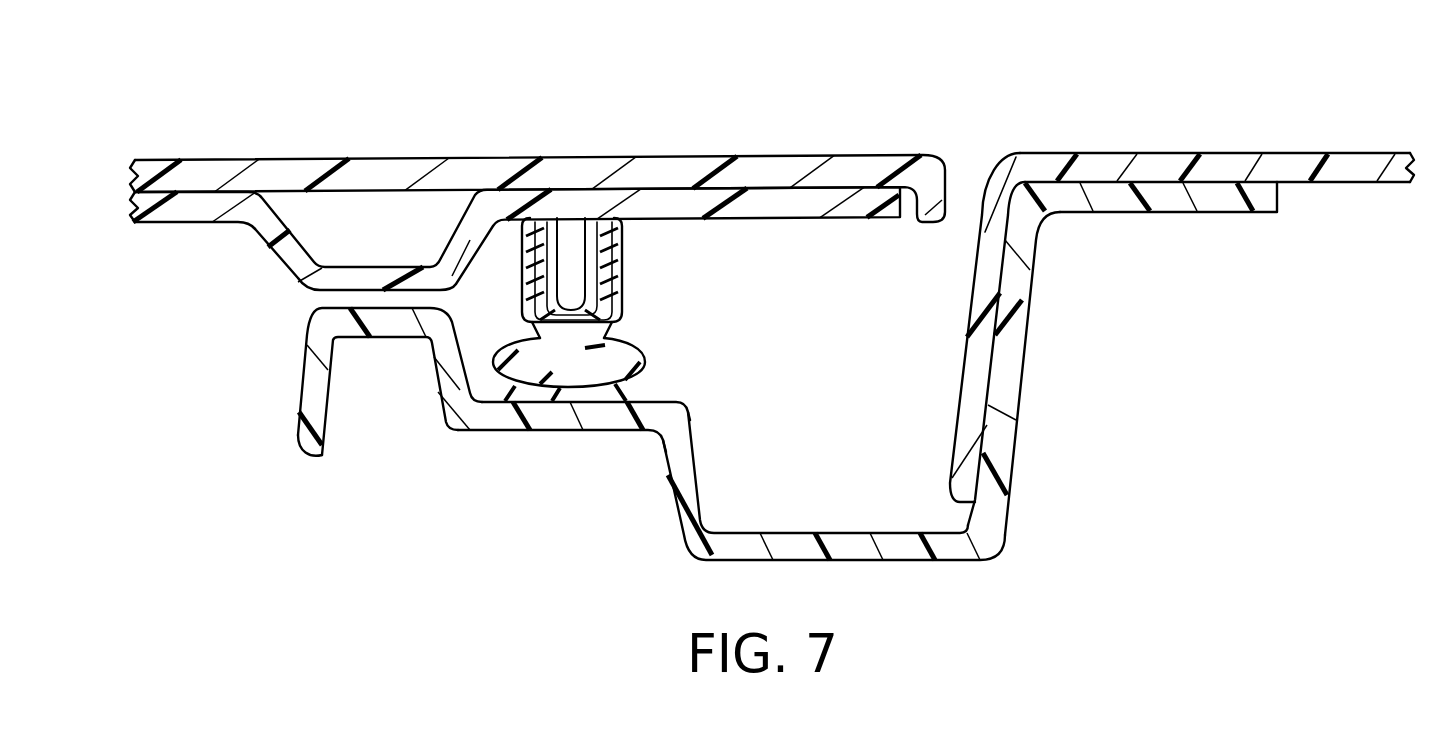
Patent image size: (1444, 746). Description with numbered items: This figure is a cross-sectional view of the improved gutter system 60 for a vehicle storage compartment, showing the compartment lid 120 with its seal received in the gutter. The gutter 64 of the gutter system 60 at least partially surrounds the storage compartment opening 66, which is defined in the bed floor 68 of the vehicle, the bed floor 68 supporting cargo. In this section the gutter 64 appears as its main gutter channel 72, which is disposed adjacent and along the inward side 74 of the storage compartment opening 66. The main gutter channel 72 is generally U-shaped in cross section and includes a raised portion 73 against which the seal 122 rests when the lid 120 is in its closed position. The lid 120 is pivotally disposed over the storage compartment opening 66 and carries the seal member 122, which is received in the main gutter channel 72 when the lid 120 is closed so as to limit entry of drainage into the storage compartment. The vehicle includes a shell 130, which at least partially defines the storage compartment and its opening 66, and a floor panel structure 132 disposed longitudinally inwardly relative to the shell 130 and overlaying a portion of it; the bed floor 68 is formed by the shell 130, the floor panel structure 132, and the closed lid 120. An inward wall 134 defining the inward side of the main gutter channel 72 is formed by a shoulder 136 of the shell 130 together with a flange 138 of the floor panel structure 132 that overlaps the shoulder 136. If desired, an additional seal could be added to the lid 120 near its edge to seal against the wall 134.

The gutter system 60 is at (734, 332).
The gutter 64 is at (895, 514).
The storage compartment opening 66 is at (182, 300).
The bed floor 68 is at (1353, 151).
The main gutter channel 72 is at (834, 517).
The raised portion 73 is at (662, 405).
The inward side 74 is at (298, 395).
The lid 120 is at (318, 158).
The seal member 122 is at (622, 350).
The shell 130 is at (332, 382).
The floor panel structure 132 is at (1226, 155).
The inward wall 134 is at (990, 327).
The shoulder 136 is at (1013, 306).
The flange 138 is at (973, 413).